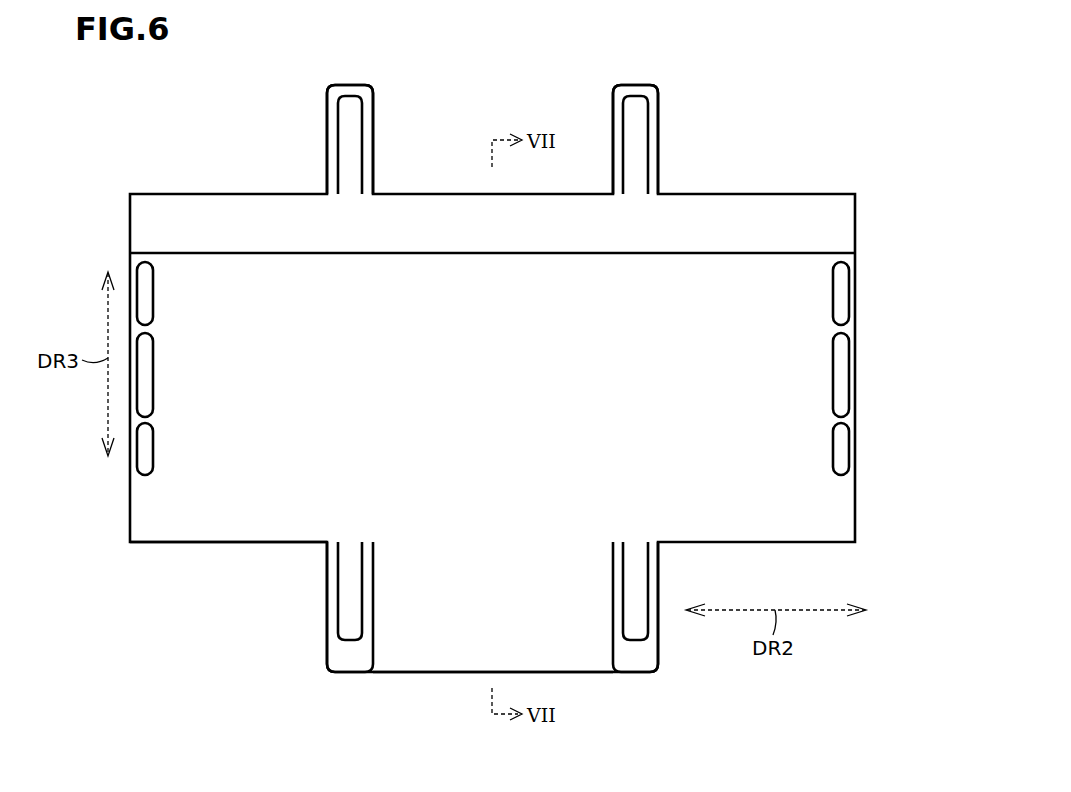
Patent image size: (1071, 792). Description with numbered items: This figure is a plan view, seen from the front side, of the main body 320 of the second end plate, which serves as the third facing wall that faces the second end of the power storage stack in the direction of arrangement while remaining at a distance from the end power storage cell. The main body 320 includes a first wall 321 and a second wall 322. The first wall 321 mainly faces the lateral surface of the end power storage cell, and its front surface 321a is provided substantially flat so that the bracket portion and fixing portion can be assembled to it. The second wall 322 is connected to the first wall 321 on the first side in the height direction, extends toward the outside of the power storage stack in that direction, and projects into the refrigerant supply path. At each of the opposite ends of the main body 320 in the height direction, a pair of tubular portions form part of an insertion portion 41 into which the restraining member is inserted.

The main body 320 is at (841, 126).
The first wall 321 is at (855, 350).
The front surface 321a is at (207, 514).
The second wall 322 is at (435, 675).
The insertion portion 41 is at (347, 85).